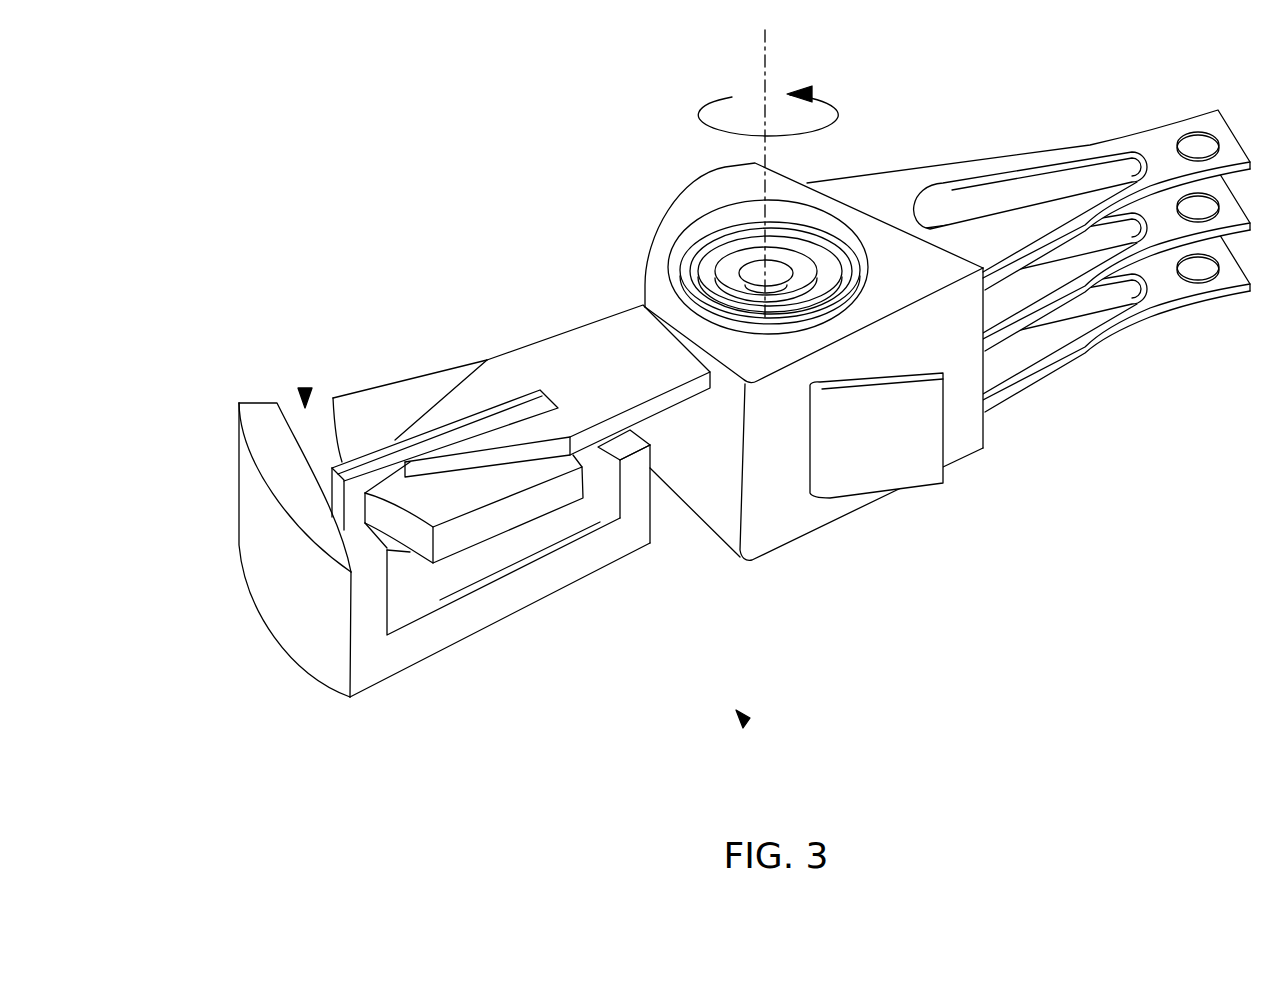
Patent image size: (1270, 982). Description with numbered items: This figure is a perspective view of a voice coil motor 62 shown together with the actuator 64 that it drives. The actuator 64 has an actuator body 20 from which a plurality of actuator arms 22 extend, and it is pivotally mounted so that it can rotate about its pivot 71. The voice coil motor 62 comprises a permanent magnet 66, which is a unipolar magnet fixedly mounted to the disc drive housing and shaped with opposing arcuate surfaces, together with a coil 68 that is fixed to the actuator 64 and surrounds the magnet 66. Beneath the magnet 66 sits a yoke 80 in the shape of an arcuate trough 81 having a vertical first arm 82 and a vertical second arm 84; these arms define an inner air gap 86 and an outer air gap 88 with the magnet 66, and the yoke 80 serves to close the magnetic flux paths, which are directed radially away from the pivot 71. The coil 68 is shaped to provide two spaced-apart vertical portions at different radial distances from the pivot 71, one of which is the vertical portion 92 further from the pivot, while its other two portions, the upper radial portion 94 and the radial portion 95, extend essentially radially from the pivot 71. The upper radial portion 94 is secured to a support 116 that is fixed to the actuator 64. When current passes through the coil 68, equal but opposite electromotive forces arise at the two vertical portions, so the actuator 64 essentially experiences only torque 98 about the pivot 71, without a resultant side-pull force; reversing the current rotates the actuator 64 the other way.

The actuator body 20 is at (957, 443).
The actuator arms 22 is at (1038, 148).
The voice coil motor 62 is at (745, 722).
The actuator 64 is at (1143, 538).
The permanent magnet 66 is at (425, 392).
The coil 68 is at (490, 418).
The pivot 71 is at (765, 66).
The yoke 80 is at (476, 632).
The arcuate trough 81 is at (500, 570).
The vertical first arm 82 is at (363, 607).
The vertical second arm 84 is at (645, 478).
The inner air gap 86 is at (305, 388).
The outer air gap 88 is at (597, 478).
The vertical portion of coil 92 is at (335, 511).
The upper radial portion of coil 94 is at (387, 477).
The radial portion of coil 95 is at (398, 562).
The torque 98 is at (697, 119).
The support 116 is at (603, 337).